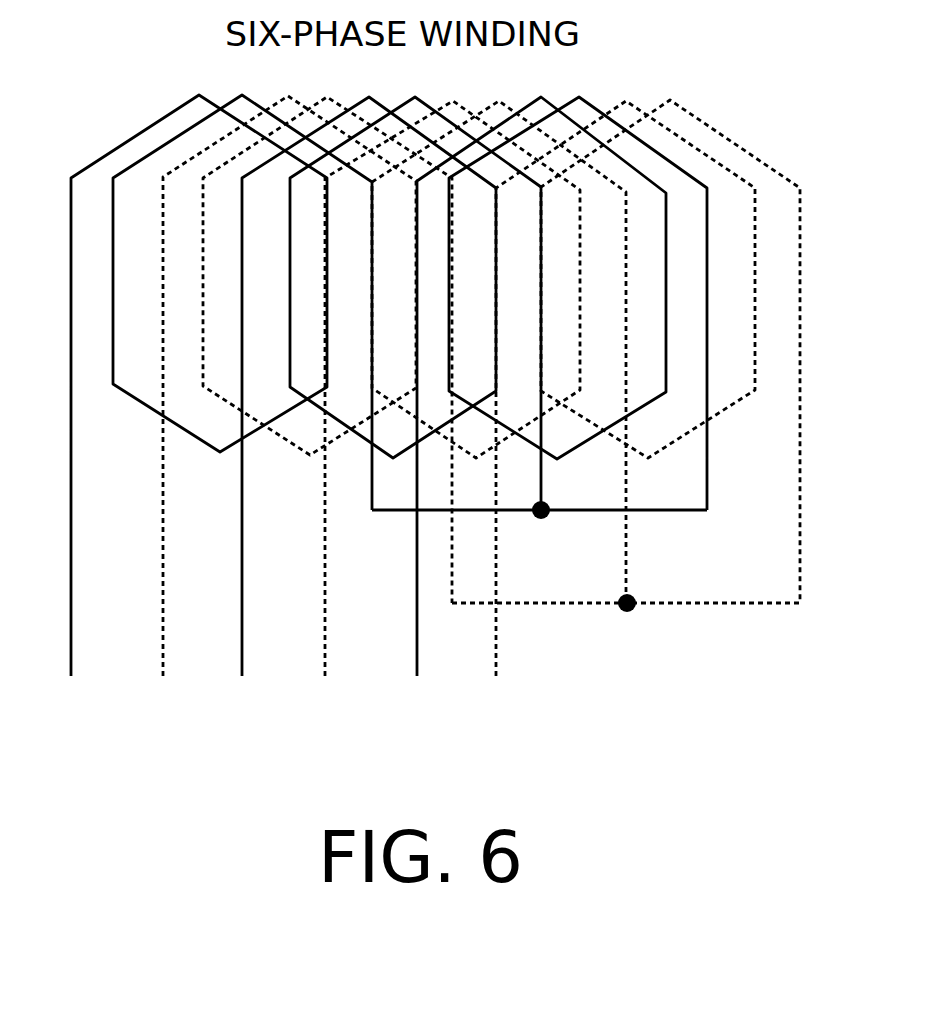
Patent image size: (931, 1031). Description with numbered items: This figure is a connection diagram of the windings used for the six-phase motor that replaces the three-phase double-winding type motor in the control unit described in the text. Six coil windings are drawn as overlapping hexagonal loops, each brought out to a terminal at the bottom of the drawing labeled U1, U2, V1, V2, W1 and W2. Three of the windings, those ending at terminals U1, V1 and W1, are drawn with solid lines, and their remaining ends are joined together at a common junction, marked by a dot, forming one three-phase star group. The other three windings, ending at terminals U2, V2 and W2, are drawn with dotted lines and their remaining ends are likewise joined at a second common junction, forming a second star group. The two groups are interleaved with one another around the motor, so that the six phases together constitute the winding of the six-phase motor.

The U1 winding terminal U1 is at (211, 407).
The U2 winding terminal U2 is at (296, 408).
The V1 winding terminal V1 is at (381, 408).
The V2 winding terminal V2 is at (464, 410).
The W1 winding terminal W1 is at (548, 408).
The W2 winding terminal W2 is at (636, 410).